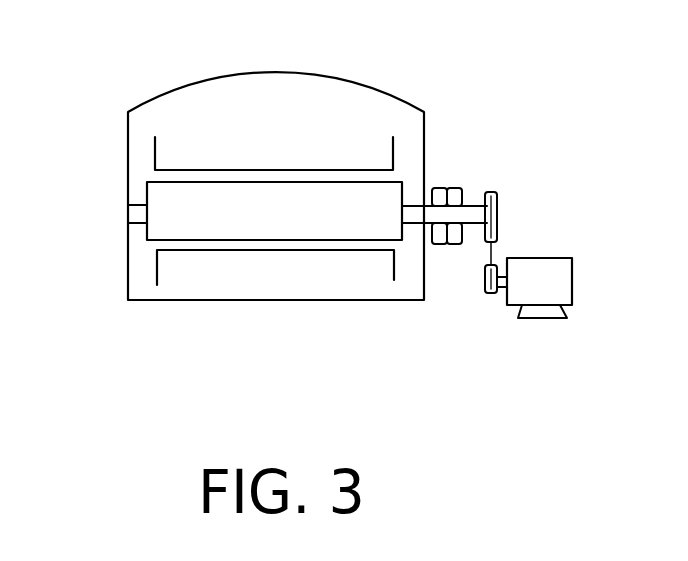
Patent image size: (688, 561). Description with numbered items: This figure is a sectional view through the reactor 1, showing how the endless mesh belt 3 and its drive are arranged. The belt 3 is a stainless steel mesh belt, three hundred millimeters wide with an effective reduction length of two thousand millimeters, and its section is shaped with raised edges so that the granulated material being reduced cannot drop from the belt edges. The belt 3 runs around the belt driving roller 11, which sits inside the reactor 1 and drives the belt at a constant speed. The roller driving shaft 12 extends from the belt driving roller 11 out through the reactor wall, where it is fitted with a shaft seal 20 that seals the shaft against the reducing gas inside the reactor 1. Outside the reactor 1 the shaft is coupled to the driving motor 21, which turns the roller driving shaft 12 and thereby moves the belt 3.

The reactor 1 is at (213, 77).
The belt 3 is at (155, 148).
The belt driving roller 11 is at (397, 183).
The roller driving shaft 12 is at (473, 203).
The shaft seal 20 is at (453, 247).
The driving motor 21 is at (557, 263).